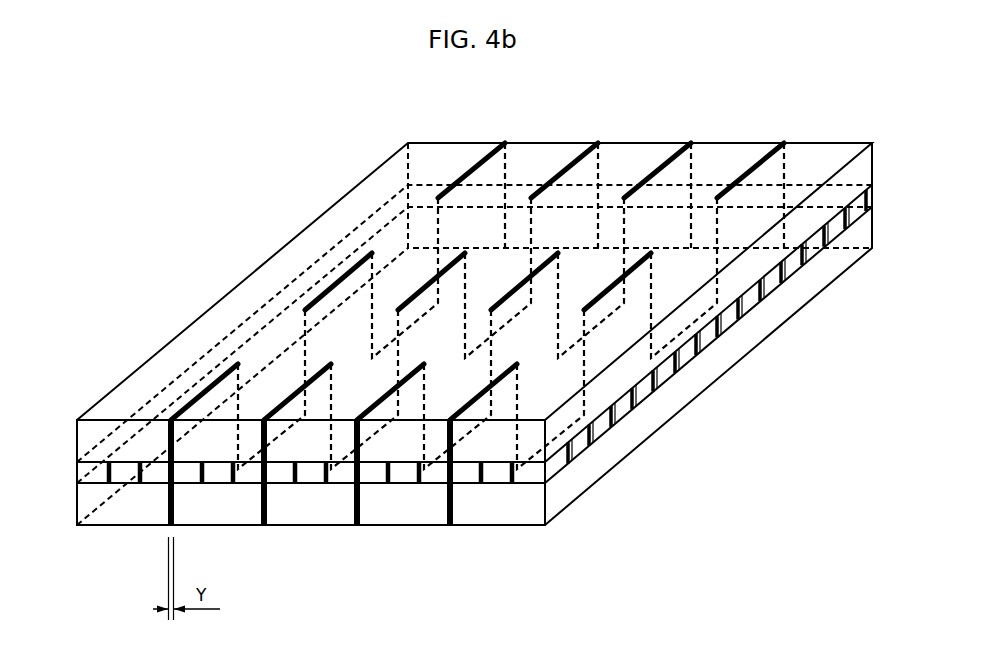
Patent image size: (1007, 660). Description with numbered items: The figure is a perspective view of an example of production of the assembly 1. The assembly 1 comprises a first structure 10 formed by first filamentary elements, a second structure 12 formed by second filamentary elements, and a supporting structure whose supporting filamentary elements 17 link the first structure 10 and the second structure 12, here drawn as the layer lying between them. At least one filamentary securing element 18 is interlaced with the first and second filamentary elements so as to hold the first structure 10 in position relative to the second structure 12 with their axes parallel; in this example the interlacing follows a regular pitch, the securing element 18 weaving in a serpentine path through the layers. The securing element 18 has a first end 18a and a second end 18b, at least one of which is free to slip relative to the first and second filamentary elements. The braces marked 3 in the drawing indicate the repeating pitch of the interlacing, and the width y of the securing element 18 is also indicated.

The assembly 1 is at (664, 62).
The segment 3 is at (604, 131).
The first structure 10 is at (805, 225).
The second structure 12 is at (588, 465).
The supporting filamentary elements 17 is at (787, 272).
The filamentary securing element 18 is at (467, 175).
The first end 18a is at (172, 527).
The second end 18b is at (505, 258).